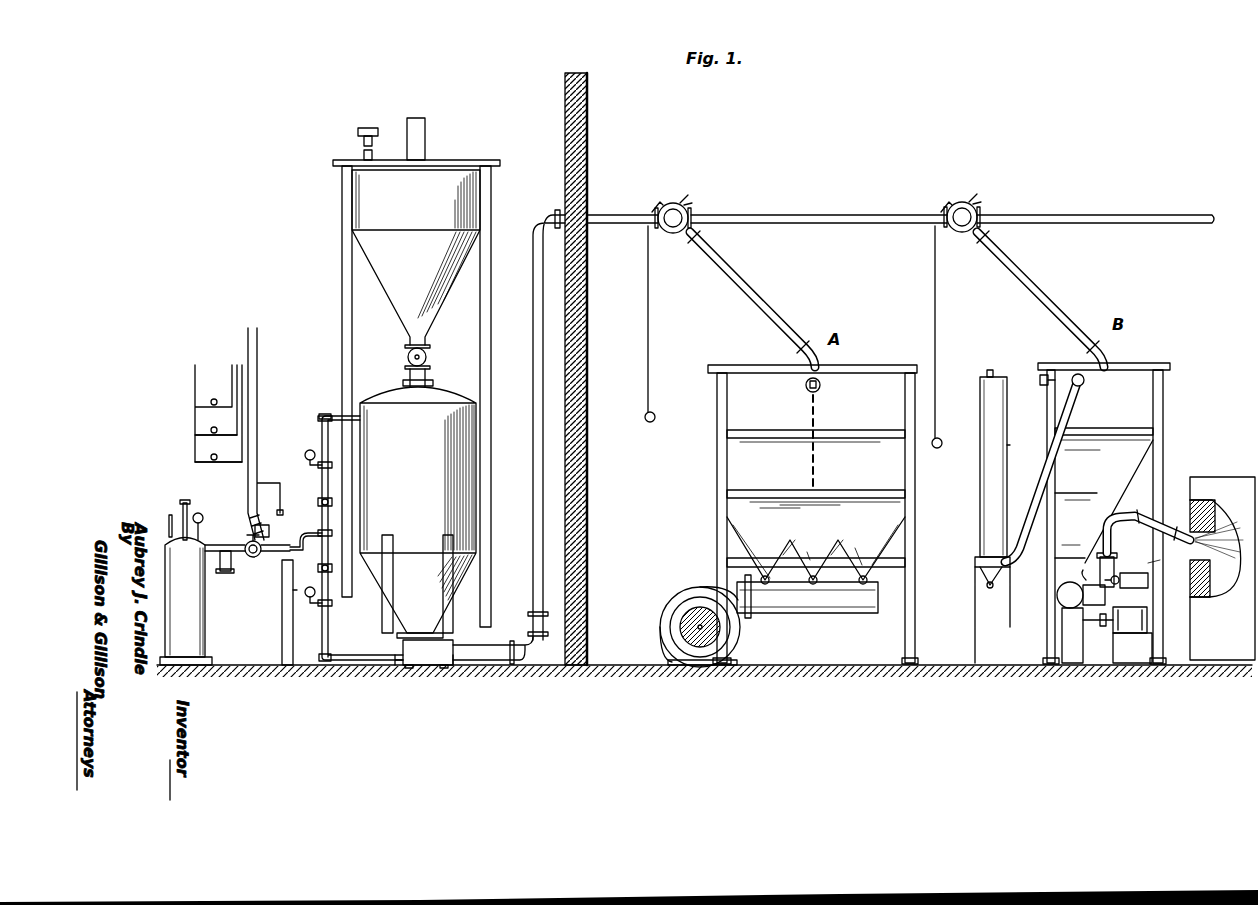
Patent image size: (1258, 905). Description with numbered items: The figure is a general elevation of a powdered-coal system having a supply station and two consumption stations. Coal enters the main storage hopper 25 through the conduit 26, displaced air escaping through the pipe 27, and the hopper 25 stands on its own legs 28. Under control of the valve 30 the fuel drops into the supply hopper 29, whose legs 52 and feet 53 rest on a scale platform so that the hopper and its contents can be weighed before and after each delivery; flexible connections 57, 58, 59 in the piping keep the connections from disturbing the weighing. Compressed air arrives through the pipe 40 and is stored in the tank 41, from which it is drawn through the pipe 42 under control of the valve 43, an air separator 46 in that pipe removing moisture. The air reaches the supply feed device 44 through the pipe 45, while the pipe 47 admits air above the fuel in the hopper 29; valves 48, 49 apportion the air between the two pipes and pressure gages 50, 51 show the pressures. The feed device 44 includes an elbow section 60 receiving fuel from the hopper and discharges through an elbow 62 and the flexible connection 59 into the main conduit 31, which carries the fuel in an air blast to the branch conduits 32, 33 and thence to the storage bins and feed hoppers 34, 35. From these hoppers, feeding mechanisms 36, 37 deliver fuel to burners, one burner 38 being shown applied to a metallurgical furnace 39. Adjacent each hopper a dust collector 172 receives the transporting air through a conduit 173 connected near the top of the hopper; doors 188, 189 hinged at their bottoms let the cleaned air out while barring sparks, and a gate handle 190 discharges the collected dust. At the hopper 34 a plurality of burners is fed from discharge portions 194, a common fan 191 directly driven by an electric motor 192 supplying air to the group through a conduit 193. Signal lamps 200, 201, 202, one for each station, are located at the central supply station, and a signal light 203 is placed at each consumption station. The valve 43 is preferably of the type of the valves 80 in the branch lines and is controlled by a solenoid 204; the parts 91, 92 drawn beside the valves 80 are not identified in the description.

The main storage hopper 25 is at (378, 210).
The conduit 26 is at (418, 118).
The pipe 27 is at (358, 138).
The legs 28 is at (496, 359).
The supply hopper 29 is at (443, 405).
The valve 30 is at (428, 352).
The conduit 31 is at (533, 380).
The branch conduit 32 is at (765, 313).
The branch conduit 33 is at (1065, 308).
The storage bin and feed hopper 34 is at (740, 468).
The storage bin and feed hopper 35 is at (1168, 398).
The feeding mechanism 36 is at (1067, 580).
The feeding mechanism 37 is at (1085, 596).
The burner 38 is at (1185, 542).
The metallurgical furnace 39 is at (1232, 490).
The pipe 40 is at (182, 502).
The tank 41 is at (205, 637).
The pipe 42 is at (209, 526).
The valve 43 is at (247, 563).
The supply feed device 44 is at (440, 648).
The pipe 45 is at (328, 640).
The air separator 46 is at (222, 573).
The pipe 47 is at (322, 427).
The valve 48 is at (307, 611).
The valve 49 is at (313, 496).
The pressure gage 50 is at (308, 598).
The pressure gage 51 is at (305, 454).
The legs 52 is at (443, 540).
The feet 53 is at (430, 665).
The flexible connection 57 is at (403, 382).
The flexible connection 58 is at (311, 530).
The flexible connection 59 is at (530, 614).
The elbow section 60 is at (405, 665).
The elbow 62 is at (530, 646).
The valves 80 is at (679, 203).
The valve handle 91 is at (655, 208).
The pull cord 92 is at (648, 296).
The dust collector 172 is at (990, 458).
The conduit 173 is at (1048, 487).
The door 188 is at (976, 518).
The door 189 is at (980, 412).
The gate handle 190 is at (988, 587).
The fan 191 is at (685, 595).
The electric motor 192 is at (1130, 630).
The conduit 193 is at (812, 613).
The discharge portions 194 is at (860, 545).
The signal lamp 200 is at (187, 413).
The signal lamp 201 is at (182, 434).
The signal lamp 202 is at (184, 460).
The signal light 203 is at (822, 388).
The solenoid 204 is at (250, 525).